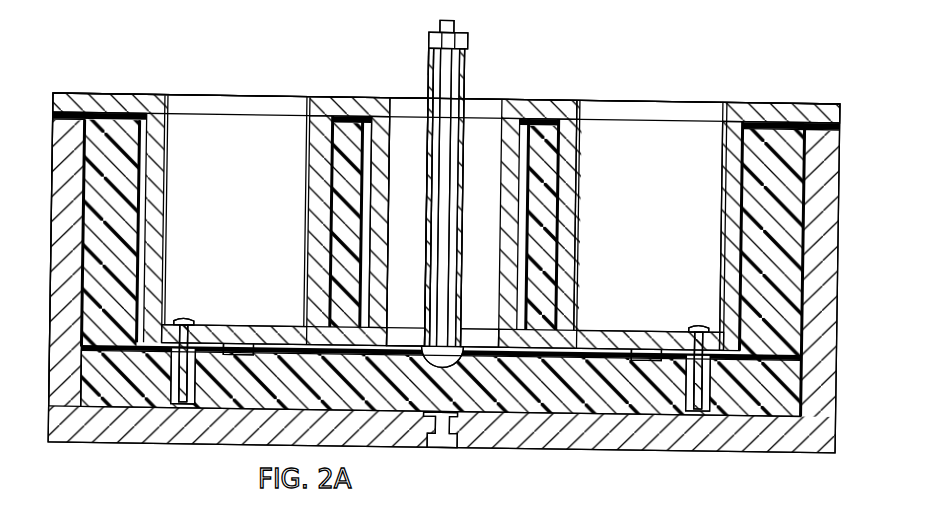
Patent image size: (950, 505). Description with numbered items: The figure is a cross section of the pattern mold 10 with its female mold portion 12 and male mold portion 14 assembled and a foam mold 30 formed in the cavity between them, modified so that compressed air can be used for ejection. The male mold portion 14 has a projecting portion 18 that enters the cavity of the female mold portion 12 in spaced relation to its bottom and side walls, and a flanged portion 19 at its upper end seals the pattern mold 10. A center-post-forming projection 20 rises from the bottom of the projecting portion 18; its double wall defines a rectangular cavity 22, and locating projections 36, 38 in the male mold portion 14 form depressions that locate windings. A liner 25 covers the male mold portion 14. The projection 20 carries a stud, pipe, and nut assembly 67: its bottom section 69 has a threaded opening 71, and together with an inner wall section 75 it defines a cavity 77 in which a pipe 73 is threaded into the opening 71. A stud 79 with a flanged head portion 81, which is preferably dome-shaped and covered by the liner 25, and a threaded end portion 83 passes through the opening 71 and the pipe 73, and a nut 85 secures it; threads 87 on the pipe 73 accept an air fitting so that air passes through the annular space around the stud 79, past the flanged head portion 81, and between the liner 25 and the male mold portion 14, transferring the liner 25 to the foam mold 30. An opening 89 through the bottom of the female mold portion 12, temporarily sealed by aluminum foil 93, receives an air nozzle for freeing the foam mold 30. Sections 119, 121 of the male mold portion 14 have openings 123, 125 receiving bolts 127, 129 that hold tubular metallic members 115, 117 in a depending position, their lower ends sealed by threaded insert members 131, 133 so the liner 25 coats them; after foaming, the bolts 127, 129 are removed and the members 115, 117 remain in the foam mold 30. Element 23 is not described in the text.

The pattern mold 10 is at (808, 481).
The female mold portion 12 is at (31, 352).
The male mold portion 14 is at (810, 83).
The projecting portion 18 is at (723, 228).
The flanged portion 19 is at (840, 112).
The projection 20 is at (542, 100).
The rectangular cavity 22 is at (566, 174).
The section line 23 is at (646, 504).
The liner 25 is at (842, 130).
The foam mold 30 is at (830, 305).
The projection 36 is at (246, 342).
The projection 38 is at (641, 345).
The stud, pipe, and nut assembly 67 is at (512, 85).
The bottom section 69 is at (403, 337).
The threaded opening 71 is at (462, 336).
The pipe 73 is at (456, 226).
The wall section 75 is at (380, 214).
The cavity 77 is at (411, 105).
The stud 79 is at (496, 175).
The flanged head portion 81 is at (450, 350).
The threaded end portion 83 is at (456, 21).
The nut 85 is at (468, 37).
The threads 87 is at (430, 50).
The opening 89 is at (446, 445).
The aluminum foil 93 is at (468, 420).
The tubular metallic member 115 is at (170, 400).
The tubular metallic member 117 is at (720, 400).
The section 119 is at (220, 340).
The section 121 is at (616, 335).
The opening 123 is at (213, 323).
The opening 125 is at (701, 320).
The bolt 127 is at (187, 316).
The bolt 129 is at (698, 326).
The threaded insert member 131 is at (185, 403).
The threaded insert member 133 is at (690, 408).